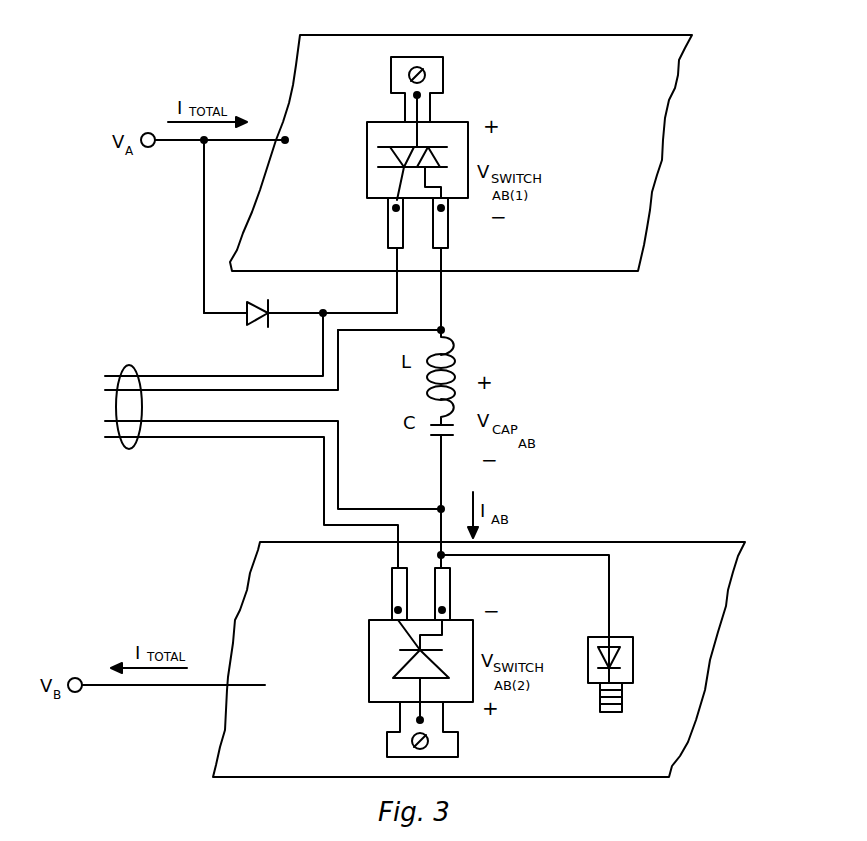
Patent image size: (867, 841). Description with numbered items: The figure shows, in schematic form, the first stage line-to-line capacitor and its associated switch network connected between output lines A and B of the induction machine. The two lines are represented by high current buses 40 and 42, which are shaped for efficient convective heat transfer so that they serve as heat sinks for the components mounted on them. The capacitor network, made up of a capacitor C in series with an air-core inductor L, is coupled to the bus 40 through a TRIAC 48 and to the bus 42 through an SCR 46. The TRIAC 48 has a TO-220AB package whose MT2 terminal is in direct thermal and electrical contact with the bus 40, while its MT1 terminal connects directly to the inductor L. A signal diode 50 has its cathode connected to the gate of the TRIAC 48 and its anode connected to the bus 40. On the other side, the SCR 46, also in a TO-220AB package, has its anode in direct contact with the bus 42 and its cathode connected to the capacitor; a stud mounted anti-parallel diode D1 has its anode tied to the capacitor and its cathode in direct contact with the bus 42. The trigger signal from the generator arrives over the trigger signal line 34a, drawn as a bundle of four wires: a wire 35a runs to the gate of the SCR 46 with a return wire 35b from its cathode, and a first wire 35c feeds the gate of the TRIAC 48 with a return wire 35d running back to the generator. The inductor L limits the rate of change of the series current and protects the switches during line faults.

The bus 40 is at (563, 277).
The bus 42 is at (492, 779).
The TRIAC 48 is at (366, 139).
The SCR 46 is at (368, 648).
The signal diode 50 is at (268, 301).
The trigger signal line 34a is at (131, 449).
The wire 35a is at (234, 441).
The return wire 35b is at (232, 421).
The first wire 35c is at (290, 395).
The return wire 35d is at (262, 363).
The anti-parallel diode D1 is at (643, 654).